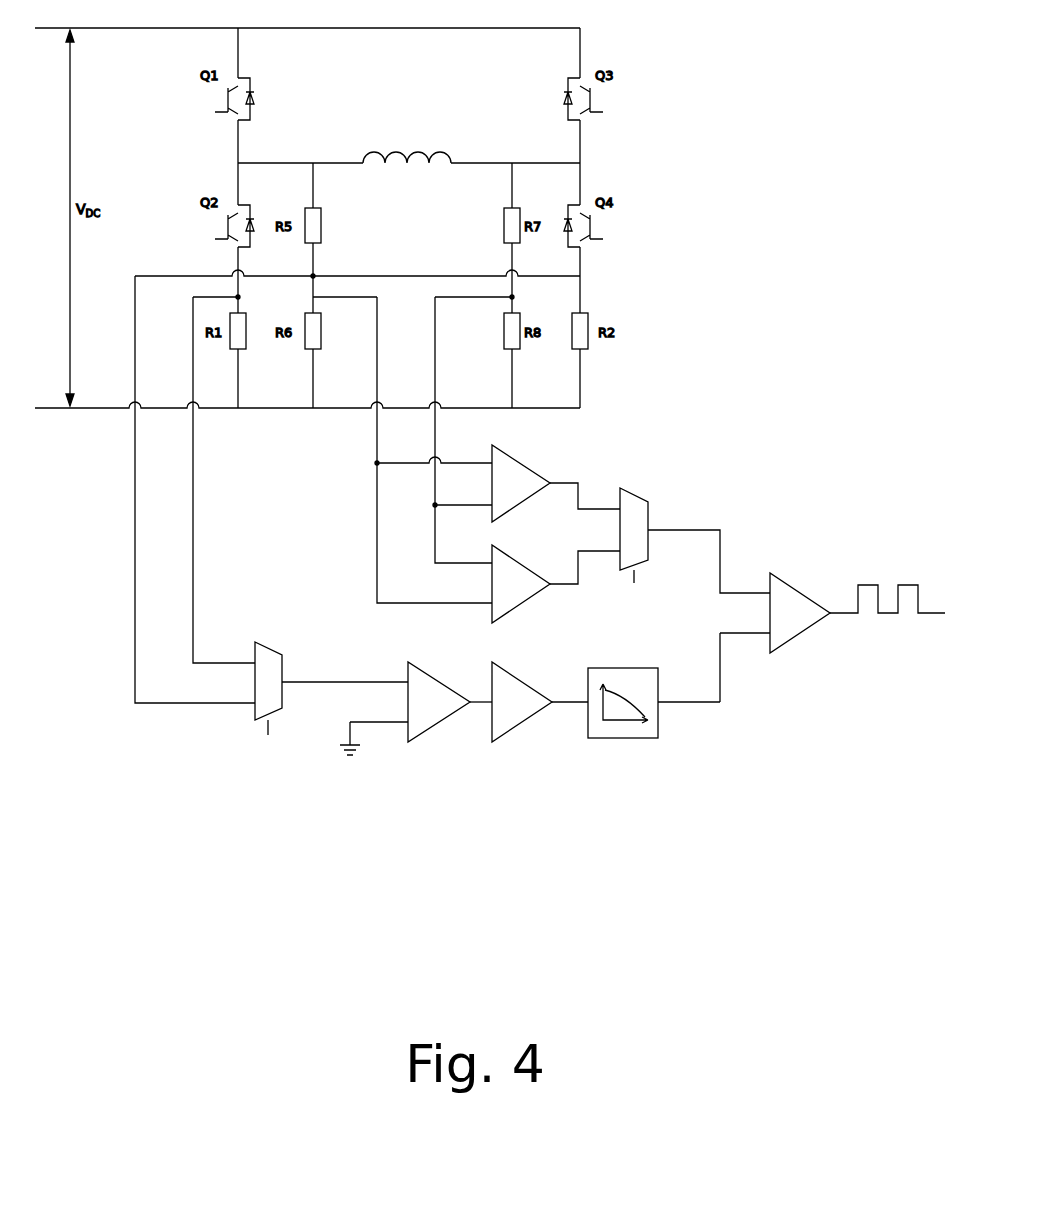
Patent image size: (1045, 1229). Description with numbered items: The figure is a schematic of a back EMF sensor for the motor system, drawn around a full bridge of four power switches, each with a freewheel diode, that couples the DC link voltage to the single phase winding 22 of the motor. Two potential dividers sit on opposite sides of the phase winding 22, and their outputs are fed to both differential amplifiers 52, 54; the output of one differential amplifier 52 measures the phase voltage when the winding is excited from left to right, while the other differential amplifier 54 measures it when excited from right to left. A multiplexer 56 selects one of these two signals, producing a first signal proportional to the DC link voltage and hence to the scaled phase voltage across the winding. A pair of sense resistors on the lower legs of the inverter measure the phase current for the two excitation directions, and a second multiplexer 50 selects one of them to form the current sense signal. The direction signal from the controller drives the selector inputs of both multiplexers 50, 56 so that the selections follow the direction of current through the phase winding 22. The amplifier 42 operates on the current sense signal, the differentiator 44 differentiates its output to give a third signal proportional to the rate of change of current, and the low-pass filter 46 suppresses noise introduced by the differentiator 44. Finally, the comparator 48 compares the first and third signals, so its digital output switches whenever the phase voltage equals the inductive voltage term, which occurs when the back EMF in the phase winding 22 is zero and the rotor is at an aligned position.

The phase winding 22 is at (397, 152).
The amplifier 42 is at (425, 720).
The differentiator 44 is at (512, 720).
The low-pass filter 46 is at (633, 730).
The comparator 48 is at (790, 603).
The multiplexer 50 is at (265, 712).
The differential amplifier 52 is at (518, 568).
The differential amplifier 54 is at (518, 482).
The multiplexer 56 is at (640, 503).